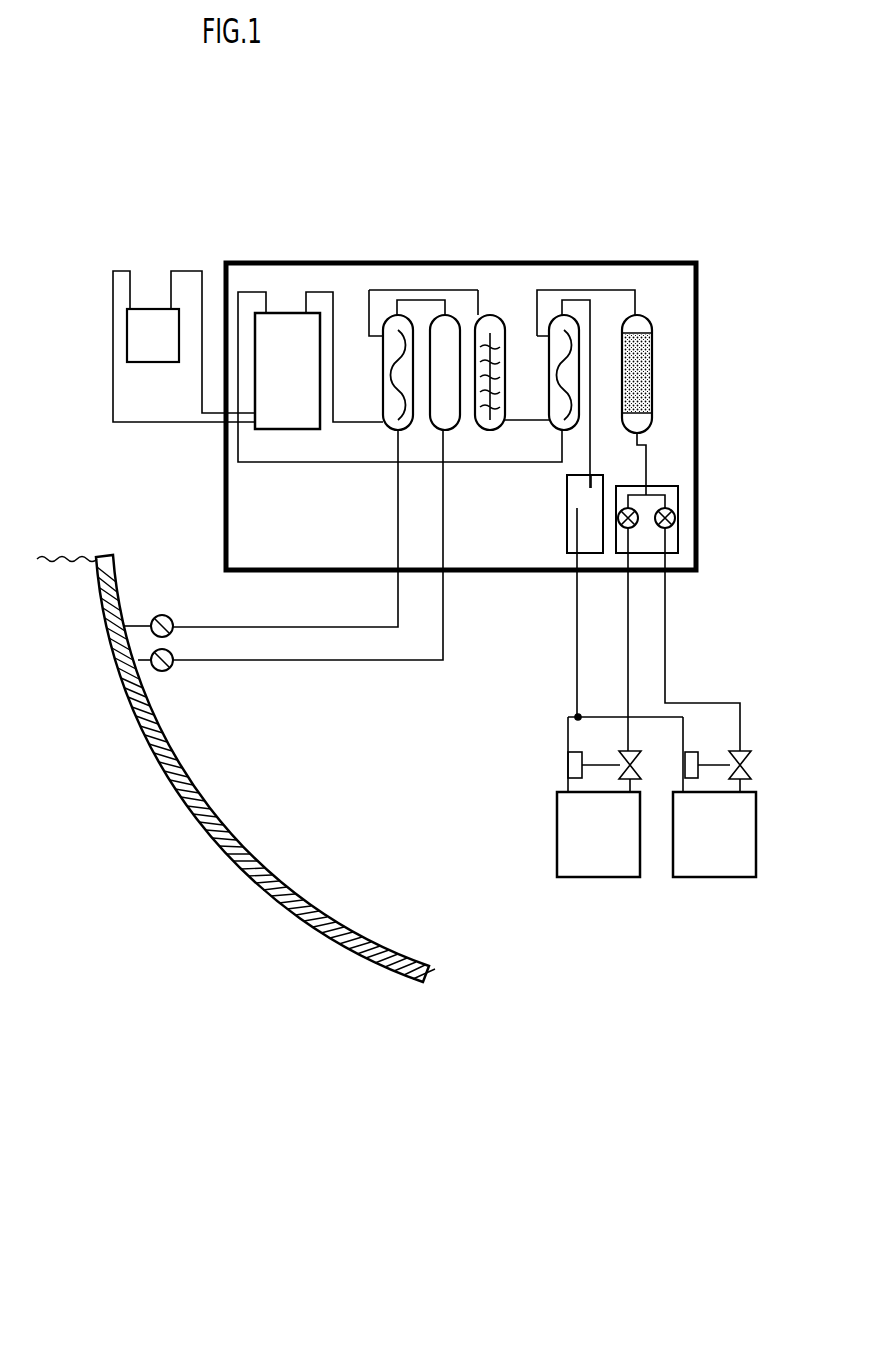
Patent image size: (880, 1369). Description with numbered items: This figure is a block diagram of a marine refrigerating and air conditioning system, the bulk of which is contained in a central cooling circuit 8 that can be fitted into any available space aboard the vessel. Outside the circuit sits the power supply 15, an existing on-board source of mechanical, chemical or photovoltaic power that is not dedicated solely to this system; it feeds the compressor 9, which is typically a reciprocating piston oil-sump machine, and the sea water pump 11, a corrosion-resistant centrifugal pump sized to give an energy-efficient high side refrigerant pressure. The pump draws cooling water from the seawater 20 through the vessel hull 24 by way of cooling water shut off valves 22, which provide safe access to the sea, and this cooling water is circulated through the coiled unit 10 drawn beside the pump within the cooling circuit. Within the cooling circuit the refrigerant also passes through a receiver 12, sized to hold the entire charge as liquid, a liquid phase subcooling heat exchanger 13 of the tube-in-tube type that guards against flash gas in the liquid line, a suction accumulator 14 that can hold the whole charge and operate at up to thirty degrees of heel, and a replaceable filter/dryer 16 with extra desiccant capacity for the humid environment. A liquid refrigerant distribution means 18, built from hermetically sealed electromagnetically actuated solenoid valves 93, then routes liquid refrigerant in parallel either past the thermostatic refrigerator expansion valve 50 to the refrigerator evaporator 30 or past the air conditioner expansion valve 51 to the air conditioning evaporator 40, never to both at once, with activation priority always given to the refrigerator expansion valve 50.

The central cooling circuit 8 is at (702, 367).
The compressor 9 is at (287, 310).
The condenser 10 is at (393, 312).
The sea water pump 11 is at (450, 310).
The receiver 12 is at (502, 312).
The liquid phase subcooling heat exchanger 13 is at (570, 313).
The suction accumulator 14 is at (565, 528).
The power supply 15 is at (152, 302).
The filter/dryer 16 is at (648, 310).
The liquid refrigerant distribution means 18 is at (682, 493).
The seawater 20 is at (65, 550).
The cooling water shut off valves 22 is at (172, 672).
The vessel hull 24 is at (160, 773).
The refrigerator evaporator 30 is at (582, 879).
The air conditioning evaporator 40 is at (727, 879).
The refrigerator expansion valve 50 is at (613, 758).
The air conditioner expansion valve 51 is at (747, 750).
The solenoid valves 93 is at (672, 528).